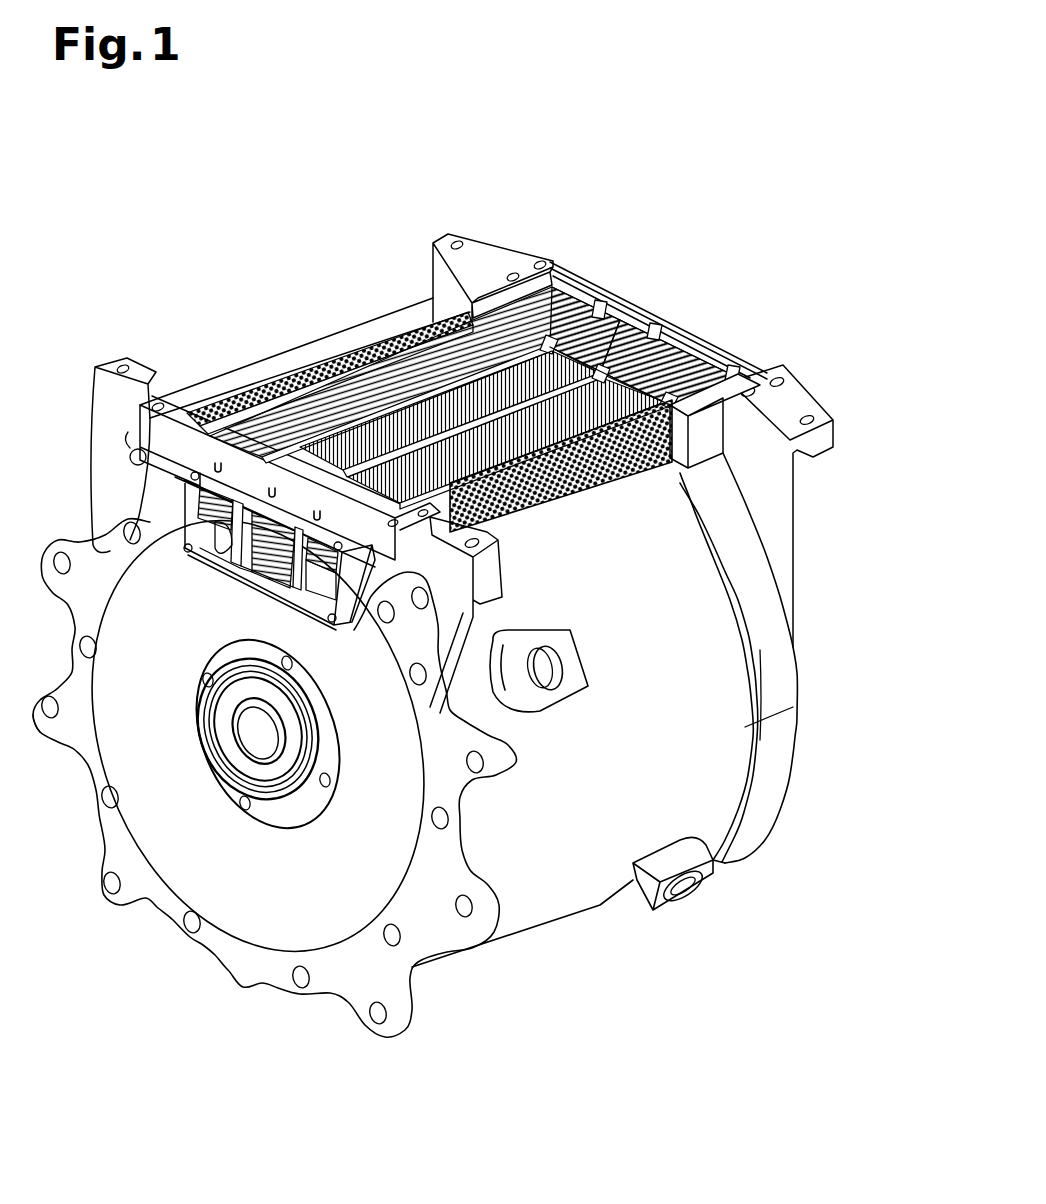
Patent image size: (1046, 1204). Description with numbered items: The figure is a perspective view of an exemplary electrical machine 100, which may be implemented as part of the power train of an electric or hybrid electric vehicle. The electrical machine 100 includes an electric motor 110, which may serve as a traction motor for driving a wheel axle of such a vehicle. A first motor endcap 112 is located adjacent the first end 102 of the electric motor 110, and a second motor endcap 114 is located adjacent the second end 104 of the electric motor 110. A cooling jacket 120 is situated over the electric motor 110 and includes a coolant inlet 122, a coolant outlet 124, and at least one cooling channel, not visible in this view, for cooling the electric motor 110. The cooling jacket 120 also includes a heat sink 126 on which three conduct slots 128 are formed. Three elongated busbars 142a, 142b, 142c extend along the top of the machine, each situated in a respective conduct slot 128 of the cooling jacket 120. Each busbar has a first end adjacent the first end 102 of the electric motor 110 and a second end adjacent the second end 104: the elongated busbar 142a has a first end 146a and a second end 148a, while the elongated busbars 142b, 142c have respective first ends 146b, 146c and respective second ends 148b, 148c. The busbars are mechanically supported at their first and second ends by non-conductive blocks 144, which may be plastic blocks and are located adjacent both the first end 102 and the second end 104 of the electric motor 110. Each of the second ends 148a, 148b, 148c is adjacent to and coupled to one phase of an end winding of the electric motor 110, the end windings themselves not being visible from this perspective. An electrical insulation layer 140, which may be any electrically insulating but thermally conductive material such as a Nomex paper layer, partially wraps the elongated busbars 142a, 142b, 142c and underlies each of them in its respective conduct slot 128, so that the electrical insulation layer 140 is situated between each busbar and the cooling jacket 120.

The electrical machine 100 is at (462, 567).
The first end 102 is at (474, 682).
The second end 104 is at (274, 755).
The electric motor 110 is at (445, 705).
The first motor endcap 112 is at (775, 800).
The second motor endcap 114 is at (172, 922).
The cooling jacket 120 is at (498, 945).
The coolant inlet 122 is at (545, 703).
The coolant outlet 124 is at (672, 905).
The heat sink 126 is at (561, 466).
The conduct slots 128 is at (584, 303).
The electrical insulation layer 140 is at (421, 421).
The elongated busbar 142a is at (390, 374).
The elongated busbar 142b is at (560, 332).
The elongated busbar 142c is at (637, 353).
The non-conductive blocks 144 is at (447, 365).
The first end 146a is at (560, 346).
The first end 146b is at (655, 380).
The first end 146c is at (718, 385).
The second end 148a is at (200, 498).
The second end 148b is at (273, 532).
The second end 148c is at (327, 556).